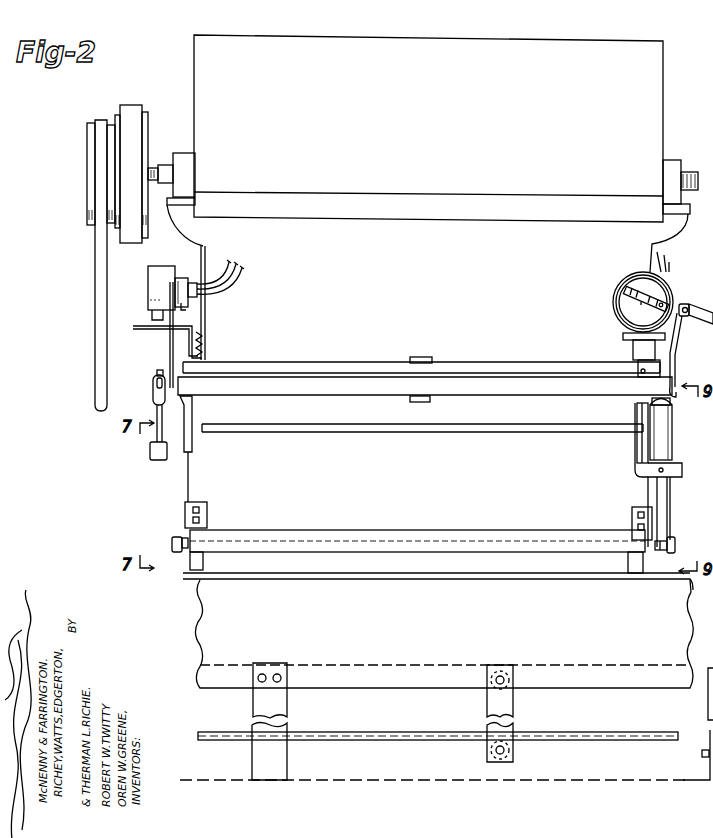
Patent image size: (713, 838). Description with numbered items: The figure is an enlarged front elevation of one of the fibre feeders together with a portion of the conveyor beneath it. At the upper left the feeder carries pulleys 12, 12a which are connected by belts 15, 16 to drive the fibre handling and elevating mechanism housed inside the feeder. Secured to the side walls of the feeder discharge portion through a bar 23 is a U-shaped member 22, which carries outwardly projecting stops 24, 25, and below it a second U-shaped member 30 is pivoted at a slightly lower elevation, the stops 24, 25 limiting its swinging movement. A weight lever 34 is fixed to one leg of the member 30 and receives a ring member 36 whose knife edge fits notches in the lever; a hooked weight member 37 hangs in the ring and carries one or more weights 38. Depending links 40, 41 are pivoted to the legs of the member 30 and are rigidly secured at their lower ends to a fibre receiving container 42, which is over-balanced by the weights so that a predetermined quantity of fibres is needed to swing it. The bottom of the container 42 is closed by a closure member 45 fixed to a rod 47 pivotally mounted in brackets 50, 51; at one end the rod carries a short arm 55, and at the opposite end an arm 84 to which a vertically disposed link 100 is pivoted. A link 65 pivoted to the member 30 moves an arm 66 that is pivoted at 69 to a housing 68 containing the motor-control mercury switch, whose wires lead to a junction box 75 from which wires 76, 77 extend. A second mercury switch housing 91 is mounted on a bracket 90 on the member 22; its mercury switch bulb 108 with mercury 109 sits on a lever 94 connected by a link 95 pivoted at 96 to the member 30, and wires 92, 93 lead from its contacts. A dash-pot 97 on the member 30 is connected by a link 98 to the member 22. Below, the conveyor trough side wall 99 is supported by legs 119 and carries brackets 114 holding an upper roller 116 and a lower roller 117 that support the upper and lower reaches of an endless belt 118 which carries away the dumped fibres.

The pulley 12 is at (152, 120).
The pulley 12a is at (87, 142).
The belt 15 is at (95, 258).
The belt 16 is at (133, 108).
The U-shaped member 22 is at (333, 362).
The bar 23 is at (204, 350).
The stop 24 is at (424, 357).
The stop 25 is at (426, 402).
The second U-shaped member 30 is at (356, 396).
The weight lever 34 is at (153, 388).
The ring member 36 is at (156, 377).
The hooked weight member 37 is at (157, 414).
The weight 38 is at (150, 452).
The depending link 40 is at (192, 420).
The depending link 41 is at (637, 420).
The fibre receiving container 42 is at (188, 479).
The closure member 45 is at (460, 552).
The rod 47 is at (175, 540).
The bracket 50 is at (208, 516).
The bracket 51 is at (632, 517).
The short arm 55 is at (182, 548).
The link 65 is at (170, 354).
The arm 66 is at (175, 296).
The housing 68 is at (163, 268).
The pivot 69 is at (680, 303).
The junction box 75 is at (184, 308).
The wire 76 is at (236, 274).
The wire 77 is at (195, 283).
The arm 84 is at (677, 542).
The bracket 90 is at (633, 352).
The mercury switch housing 91 is at (618, 286).
The wire 92 is at (650, 257).
The wire 93 is at (670, 266).
The lever 94 is at (701, 307).
The link 95 is at (680, 348).
The pivot 96 is at (677, 394).
The dash-pot 97 is at (672, 438).
The link 98 is at (635, 456).
The side wall 99 is at (636, 688).
The vertically disposed link 100 is at (672, 520).
The mercury switch bulb 108 is at (627, 304).
The mercury 109 is at (641, 306).
The bracket 114 is at (514, 716).
The upper roller 116 is at (514, 682).
The lower roller 117 is at (513, 753).
The endless belt 118 is at (418, 665).
The leg 119 is at (287, 712).